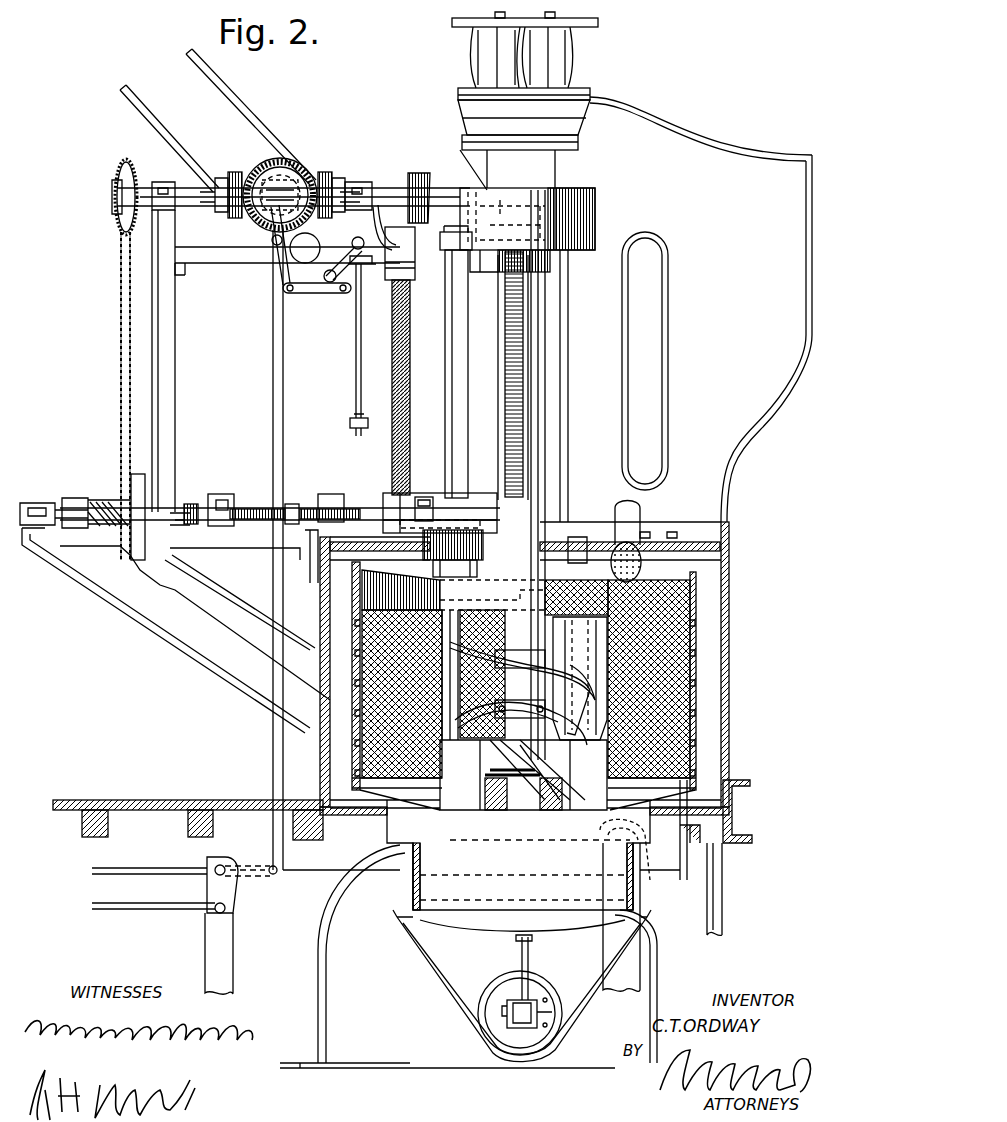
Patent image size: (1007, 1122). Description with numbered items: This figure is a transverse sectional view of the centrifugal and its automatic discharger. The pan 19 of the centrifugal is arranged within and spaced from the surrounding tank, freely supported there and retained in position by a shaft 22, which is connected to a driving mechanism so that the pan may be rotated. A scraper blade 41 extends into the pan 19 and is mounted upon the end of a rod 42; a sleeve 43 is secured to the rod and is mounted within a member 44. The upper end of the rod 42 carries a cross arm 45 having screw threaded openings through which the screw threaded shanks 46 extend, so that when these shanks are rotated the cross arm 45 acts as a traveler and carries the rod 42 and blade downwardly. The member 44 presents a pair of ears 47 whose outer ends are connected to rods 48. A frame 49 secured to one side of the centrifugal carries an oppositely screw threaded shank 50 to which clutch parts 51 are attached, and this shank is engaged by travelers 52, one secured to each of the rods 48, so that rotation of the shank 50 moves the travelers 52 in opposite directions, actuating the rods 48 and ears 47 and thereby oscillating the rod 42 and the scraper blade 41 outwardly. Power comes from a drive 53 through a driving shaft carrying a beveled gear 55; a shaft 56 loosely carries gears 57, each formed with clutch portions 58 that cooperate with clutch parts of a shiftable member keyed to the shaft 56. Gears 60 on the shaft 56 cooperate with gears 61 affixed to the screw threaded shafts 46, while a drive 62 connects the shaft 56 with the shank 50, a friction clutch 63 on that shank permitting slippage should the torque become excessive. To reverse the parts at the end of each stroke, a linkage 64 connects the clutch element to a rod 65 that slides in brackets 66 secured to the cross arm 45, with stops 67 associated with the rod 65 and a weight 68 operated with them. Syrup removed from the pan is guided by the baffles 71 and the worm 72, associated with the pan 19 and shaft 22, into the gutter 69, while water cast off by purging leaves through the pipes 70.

The pan 19 is at (642, 560).
The shaft 22 is at (546, 440).
The scraper blade 41 is at (395, 606).
The rod 42 is at (446, 452).
The sleeve 43 is at (455, 502).
The member 44 is at (455, 540).
The cross arm 45 is at (448, 290).
The screw threaded shanks 46 is at (392, 452).
The ears 47 is at (426, 497).
The rods 48 is at (352, 504).
The frame 49 is at (182, 520).
The oppositely screw threaded shank 50 is at (262, 510).
The clutch parts 51 is at (190, 504).
The travelers 52 is at (215, 496).
The drive 53 is at (245, 104).
The beveled gear 55 is at (305, 168).
The shaft 56 is at (178, 190).
The gears 57 is at (326, 176).
The clutch portions 58 is at (282, 182).
The gears 60 is at (460, 196).
The gears 61 is at (398, 212).
The drive 62 is at (120, 378).
The friction clutch 63 is at (130, 492).
The linkage 64 is at (284, 290).
The rod 65 is at (352, 350).
The brackets 66 is at (368, 292).
The stops 67 is at (350, 426).
The weight 68 is at (308, 258).
The gutter 69 is at (522, 986).
The pipes 70 is at (705, 864).
The baffles 71 is at (580, 648).
The worm 72 is at (580, 720).